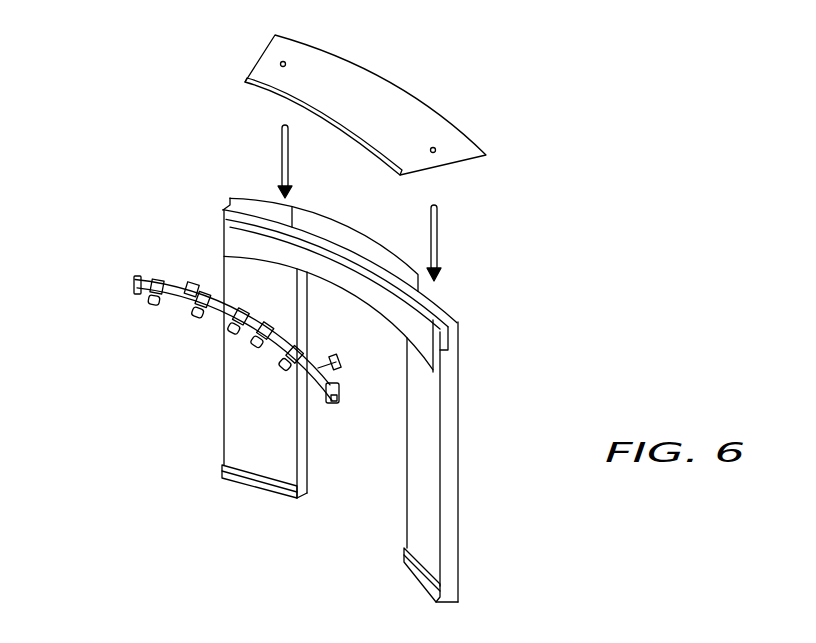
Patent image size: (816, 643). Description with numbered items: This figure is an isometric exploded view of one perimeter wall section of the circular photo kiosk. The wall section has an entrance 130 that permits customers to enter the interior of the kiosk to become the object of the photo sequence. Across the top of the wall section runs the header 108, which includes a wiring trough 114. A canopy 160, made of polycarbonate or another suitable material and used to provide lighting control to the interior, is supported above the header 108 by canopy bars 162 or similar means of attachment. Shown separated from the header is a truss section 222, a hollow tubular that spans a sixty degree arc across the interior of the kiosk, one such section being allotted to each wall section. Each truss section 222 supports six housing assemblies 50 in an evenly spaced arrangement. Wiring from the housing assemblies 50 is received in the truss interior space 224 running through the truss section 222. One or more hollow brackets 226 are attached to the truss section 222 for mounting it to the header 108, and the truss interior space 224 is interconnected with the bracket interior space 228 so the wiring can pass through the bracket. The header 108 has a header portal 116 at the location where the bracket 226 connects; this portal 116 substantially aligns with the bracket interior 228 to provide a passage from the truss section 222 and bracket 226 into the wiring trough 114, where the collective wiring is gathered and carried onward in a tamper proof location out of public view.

The canopy 160 is at (425, 91).
The canopy bars 162 is at (440, 230).
The header portal 116 is at (243, 197).
The wiring trough 114 is at (440, 315).
The header 108 is at (457, 333).
The truss section 222 is at (158, 269).
The truss interior space 224 is at (125, 282).
The hollow bracket 226 is at (192, 278).
The housing assembly 50 is at (188, 315).
The bracket interior space 228 is at (348, 353).
The entrance 130 is at (363, 443).